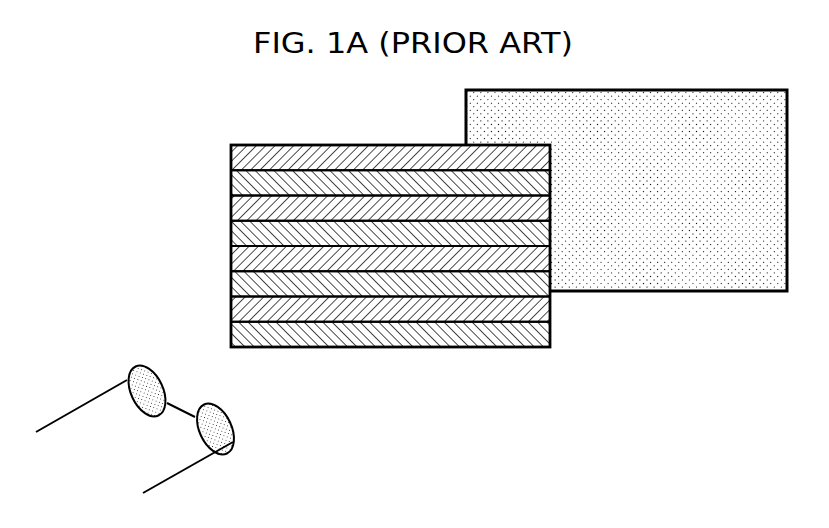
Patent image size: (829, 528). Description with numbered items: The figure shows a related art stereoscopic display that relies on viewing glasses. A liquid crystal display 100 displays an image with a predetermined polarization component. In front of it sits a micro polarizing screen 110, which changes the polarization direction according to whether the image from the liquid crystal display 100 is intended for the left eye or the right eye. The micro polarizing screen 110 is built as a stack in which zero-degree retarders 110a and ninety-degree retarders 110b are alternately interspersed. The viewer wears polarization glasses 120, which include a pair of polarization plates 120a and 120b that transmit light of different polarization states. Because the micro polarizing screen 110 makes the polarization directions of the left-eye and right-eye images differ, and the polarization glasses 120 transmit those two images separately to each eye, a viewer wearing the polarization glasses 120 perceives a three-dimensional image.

The liquid crystal display 100 is at (707, 292).
The micro polarizing screen 110 is at (356, 269).
The 0° retarder 110a is at (246, 157).
The 90° retarder 110b is at (246, 184).
The polarization glasses 120 is at (163, 433).
The polarization plate 120a is at (153, 380).
The polarization plate 120b is at (225, 417).